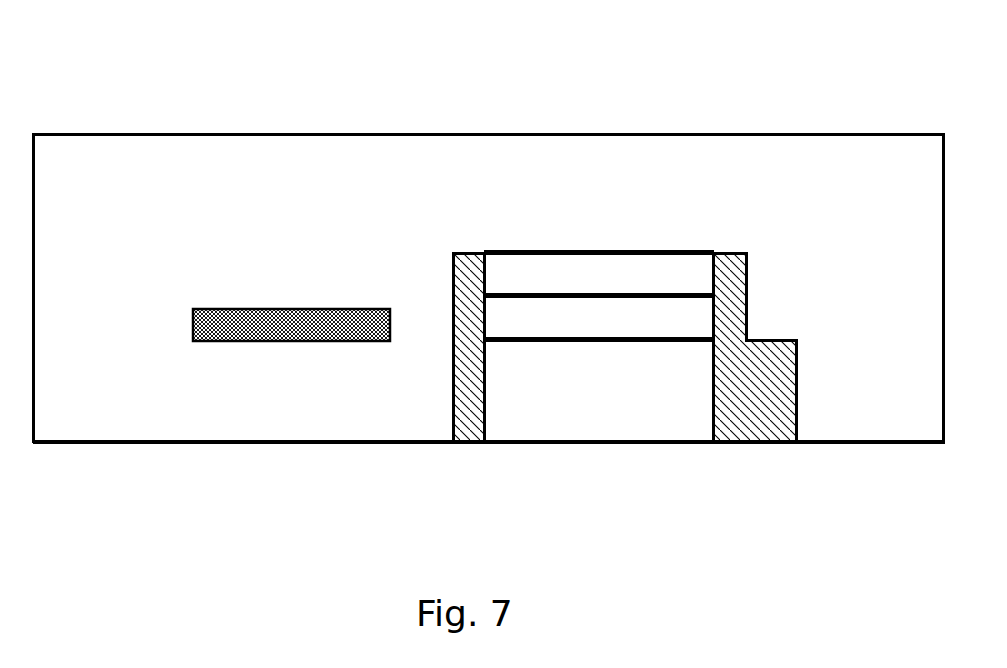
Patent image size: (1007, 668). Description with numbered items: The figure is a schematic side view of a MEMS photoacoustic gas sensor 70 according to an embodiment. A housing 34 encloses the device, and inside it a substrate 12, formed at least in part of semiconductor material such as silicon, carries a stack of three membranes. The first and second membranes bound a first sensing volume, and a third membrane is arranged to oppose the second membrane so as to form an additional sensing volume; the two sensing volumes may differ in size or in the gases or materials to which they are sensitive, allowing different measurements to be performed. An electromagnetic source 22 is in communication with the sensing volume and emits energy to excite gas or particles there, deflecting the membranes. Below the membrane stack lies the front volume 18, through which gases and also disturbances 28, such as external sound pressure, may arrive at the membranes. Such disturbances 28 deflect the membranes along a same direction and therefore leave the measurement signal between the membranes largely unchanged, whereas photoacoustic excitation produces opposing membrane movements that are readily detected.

The MEMS photoacoustic gas sensor 70 is at (834, 41).
The disturbances 28 is at (416, 163).
The housing 34 is at (855, 447).
The electromagnetic source 22 is at (288, 318).
The substrate 12 is at (785, 386).
The front volume 18 is at (604, 425).